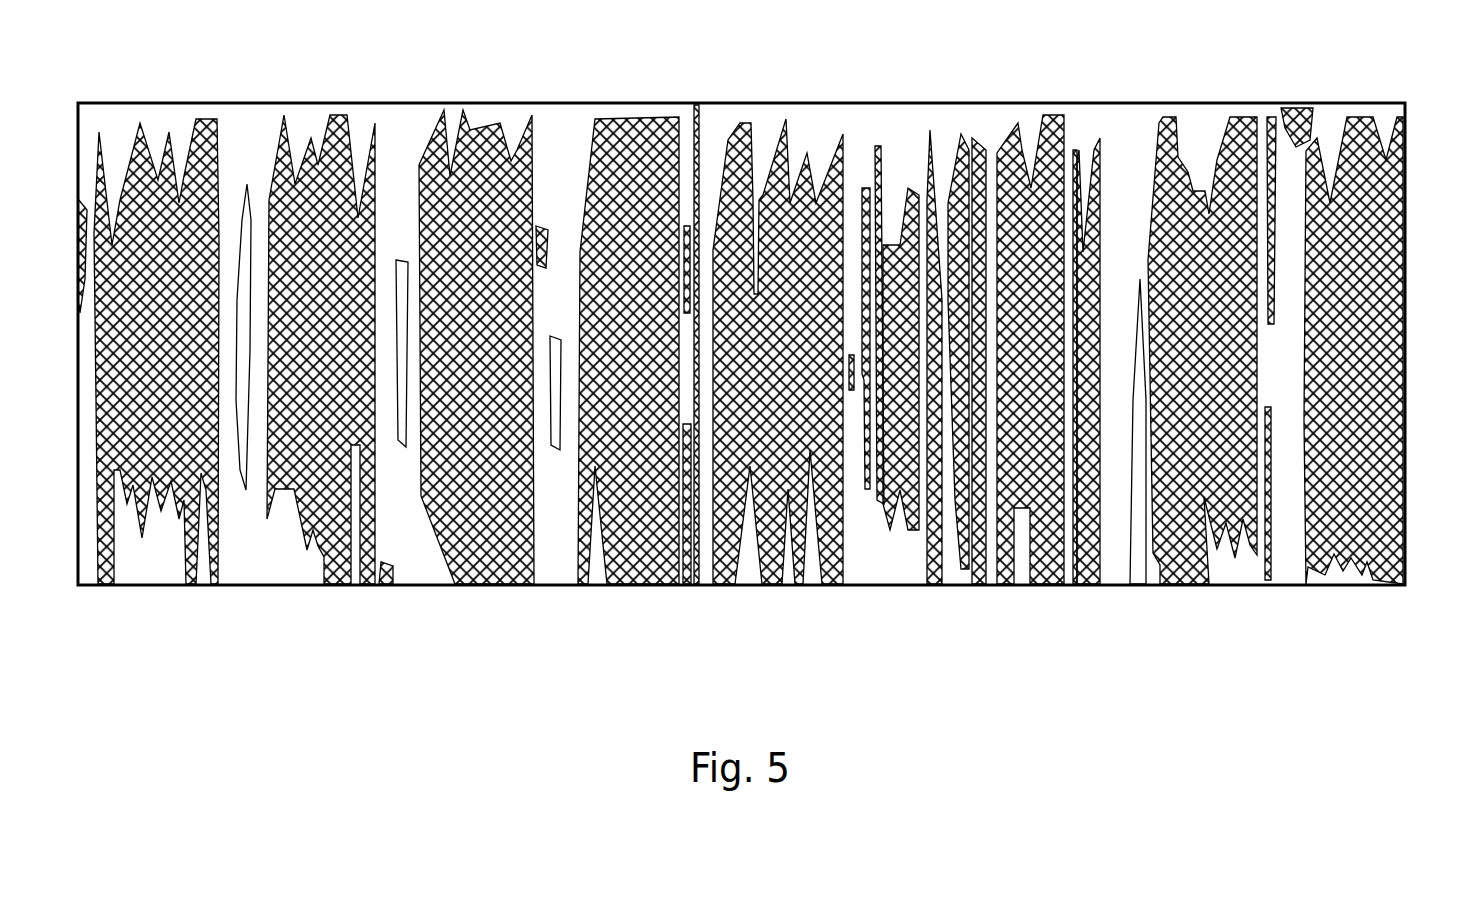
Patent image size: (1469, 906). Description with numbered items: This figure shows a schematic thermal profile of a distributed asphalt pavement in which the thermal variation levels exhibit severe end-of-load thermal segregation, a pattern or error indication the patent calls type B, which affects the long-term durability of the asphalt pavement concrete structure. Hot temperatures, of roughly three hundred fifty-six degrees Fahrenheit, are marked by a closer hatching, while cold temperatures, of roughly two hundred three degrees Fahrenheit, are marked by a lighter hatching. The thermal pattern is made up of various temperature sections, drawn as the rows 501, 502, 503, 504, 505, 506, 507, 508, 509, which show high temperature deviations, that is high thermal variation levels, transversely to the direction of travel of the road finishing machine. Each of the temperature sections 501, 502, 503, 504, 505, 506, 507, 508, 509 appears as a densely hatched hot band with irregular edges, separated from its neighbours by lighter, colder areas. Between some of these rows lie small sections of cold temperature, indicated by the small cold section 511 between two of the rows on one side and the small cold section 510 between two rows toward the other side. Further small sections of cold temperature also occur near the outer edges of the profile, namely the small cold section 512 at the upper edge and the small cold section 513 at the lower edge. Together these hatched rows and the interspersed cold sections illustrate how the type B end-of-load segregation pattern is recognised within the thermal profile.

The temperature section 501 is at (1300, 600).
The temperature section 502 is at (1280, 600).
The temperature section 503 is at (1115, 600).
The temperature section 504 is at (868, 600).
The temperature section 505 is at (845, 600).
The temperature section 506 is at (700, 600).
The temperature section 507 is at (545, 600).
The temperature section 508 is at (257, 600).
The temperature section 509 is at (93, 600).
The small section of cold temperature 510 is at (1133, 488).
The small section of cold temperature 511 is at (237, 452).
The small section of cold temperature 512 is at (1310, 114).
The small section of cold temperature 513 is at (386, 604).